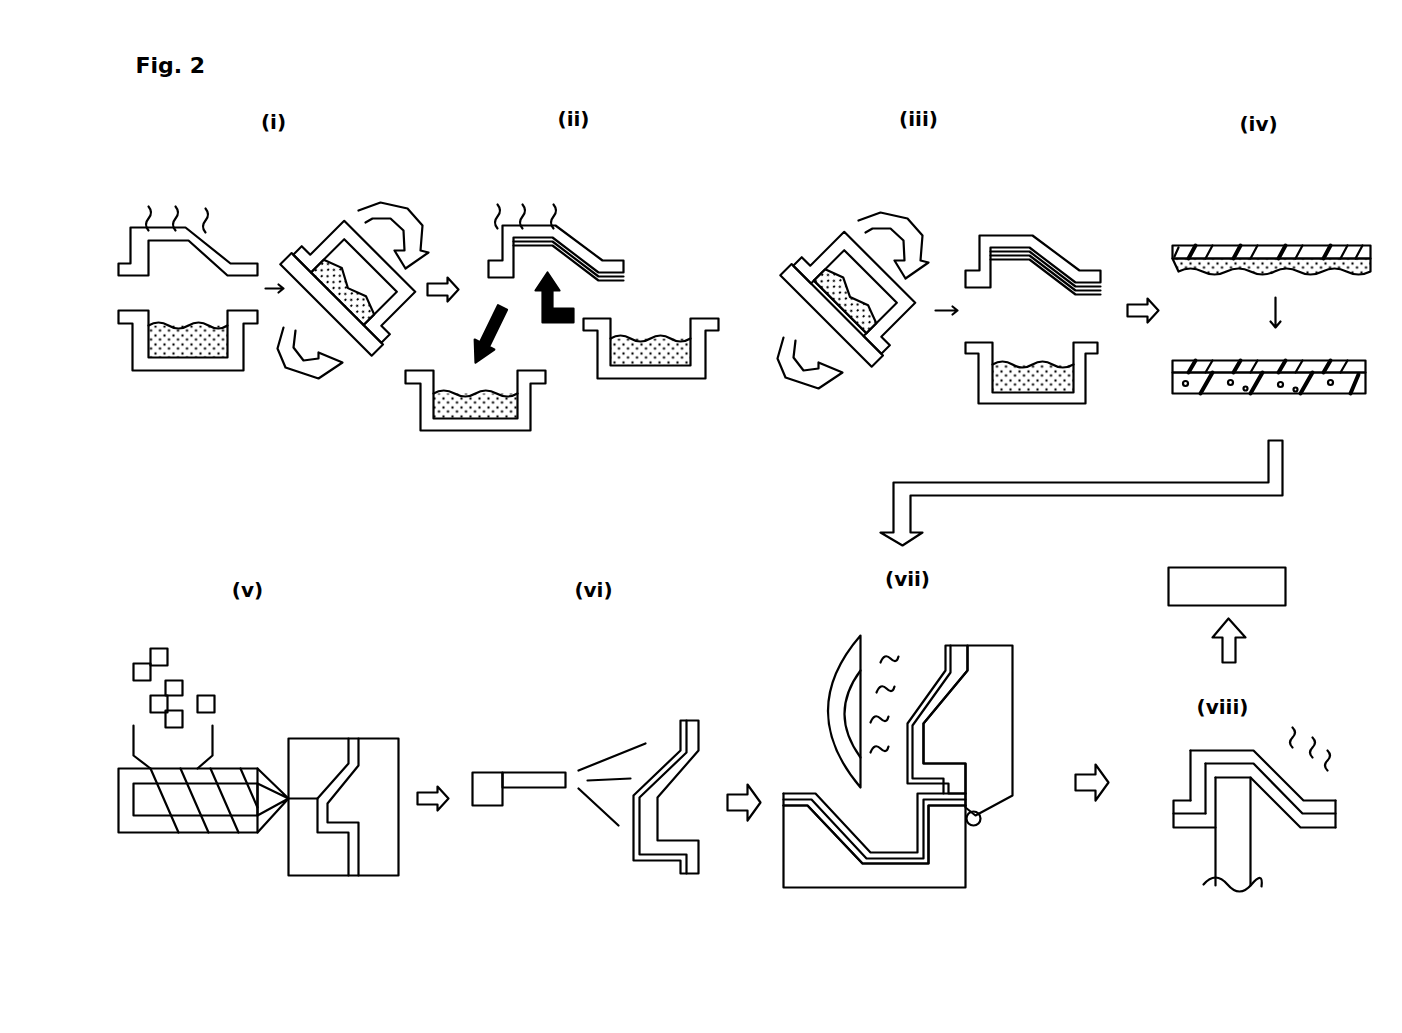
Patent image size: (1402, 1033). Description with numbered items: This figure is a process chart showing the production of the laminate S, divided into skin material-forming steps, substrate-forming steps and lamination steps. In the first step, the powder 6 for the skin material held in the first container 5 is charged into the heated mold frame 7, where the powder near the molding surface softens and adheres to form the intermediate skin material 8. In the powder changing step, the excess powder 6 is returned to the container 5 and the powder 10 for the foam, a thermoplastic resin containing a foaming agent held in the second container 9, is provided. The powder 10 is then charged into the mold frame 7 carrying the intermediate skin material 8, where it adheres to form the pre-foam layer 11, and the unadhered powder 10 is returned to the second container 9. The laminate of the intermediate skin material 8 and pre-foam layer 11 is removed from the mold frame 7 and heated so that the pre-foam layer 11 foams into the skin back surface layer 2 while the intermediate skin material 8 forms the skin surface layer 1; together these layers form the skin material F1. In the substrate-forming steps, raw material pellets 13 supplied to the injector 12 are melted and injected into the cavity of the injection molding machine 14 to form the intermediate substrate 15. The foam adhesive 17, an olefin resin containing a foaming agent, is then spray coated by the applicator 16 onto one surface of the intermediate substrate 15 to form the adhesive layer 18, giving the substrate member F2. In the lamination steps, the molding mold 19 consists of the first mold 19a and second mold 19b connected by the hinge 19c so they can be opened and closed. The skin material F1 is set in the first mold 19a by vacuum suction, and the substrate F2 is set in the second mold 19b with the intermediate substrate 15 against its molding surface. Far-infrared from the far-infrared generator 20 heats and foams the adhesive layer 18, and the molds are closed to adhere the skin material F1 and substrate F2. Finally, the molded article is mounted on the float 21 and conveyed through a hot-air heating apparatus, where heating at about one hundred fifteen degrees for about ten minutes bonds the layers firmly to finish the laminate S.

The skin surface layer 1 is at (1172, 368).
The skin back surface layer 2 is at (1172, 388).
The first container 5 is at (200, 368).
The powder for the skin material 6 is at (168, 322).
The mold frame 7 is at (212, 242).
The intermediate skin material 8 is at (598, 277).
The second container 9 is at (663, 378).
The powder for the foam 10 is at (663, 333).
The pre-foam layer 11 is at (1073, 287).
The injector 12 is at (153, 832).
The raw material pellets 13 is at (198, 674).
The injection molding machine 14 is at (370, 752).
The intermediate substrate 15 is at (353, 740).
The applicator 16 is at (518, 772).
The foam adhesive 17 is at (593, 803).
The adhesive layer 18 is at (678, 740).
The molding mold 19 is at (934, 767).
The first mold 19a is at (950, 870).
The second mold 19b is at (998, 678).
The hinge 19c is at (980, 818).
The far-infrared generator 20 is at (832, 660).
The float 21 is at (1213, 863).
The skin material F1 is at (1122, 392).
The substrate member F2 is at (1038, 577).
The laminate S is at (1287, 583).